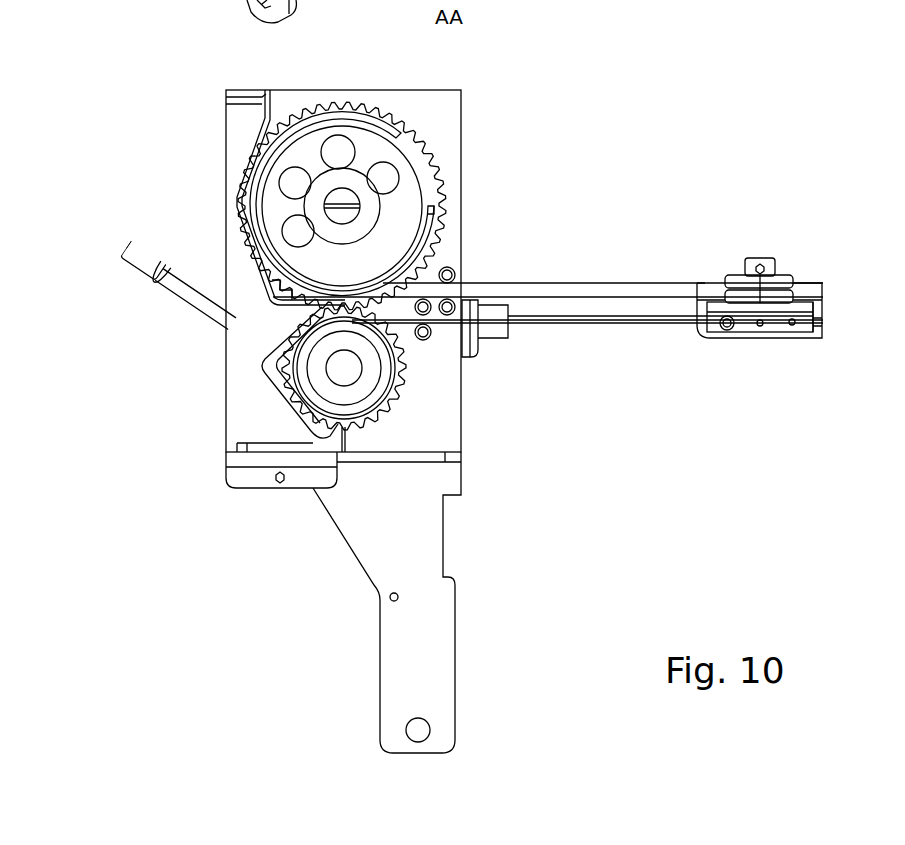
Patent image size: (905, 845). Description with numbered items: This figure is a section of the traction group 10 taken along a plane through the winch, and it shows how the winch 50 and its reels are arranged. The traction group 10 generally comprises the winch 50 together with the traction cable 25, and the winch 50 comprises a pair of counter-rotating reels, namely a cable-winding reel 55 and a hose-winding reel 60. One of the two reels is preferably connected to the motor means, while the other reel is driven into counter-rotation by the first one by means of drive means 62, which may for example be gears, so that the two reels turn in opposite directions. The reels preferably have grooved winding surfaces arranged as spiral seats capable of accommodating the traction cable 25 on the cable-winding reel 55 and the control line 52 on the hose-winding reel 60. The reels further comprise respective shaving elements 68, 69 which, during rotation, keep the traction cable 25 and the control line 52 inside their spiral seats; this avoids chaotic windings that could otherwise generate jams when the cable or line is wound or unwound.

The traction group 10 is at (585, 192).
The traction cable 25 is at (648, 331).
The winch 50 is at (456, 136).
The control line 52 is at (650, 274).
The cable-winding reel 55 is at (384, 391).
The hose-winding reel 60 is at (462, 204).
The drive means 62 is at (293, 100).
The shaving element 68 is at (278, 408).
The shaving element 69 is at (230, 190).